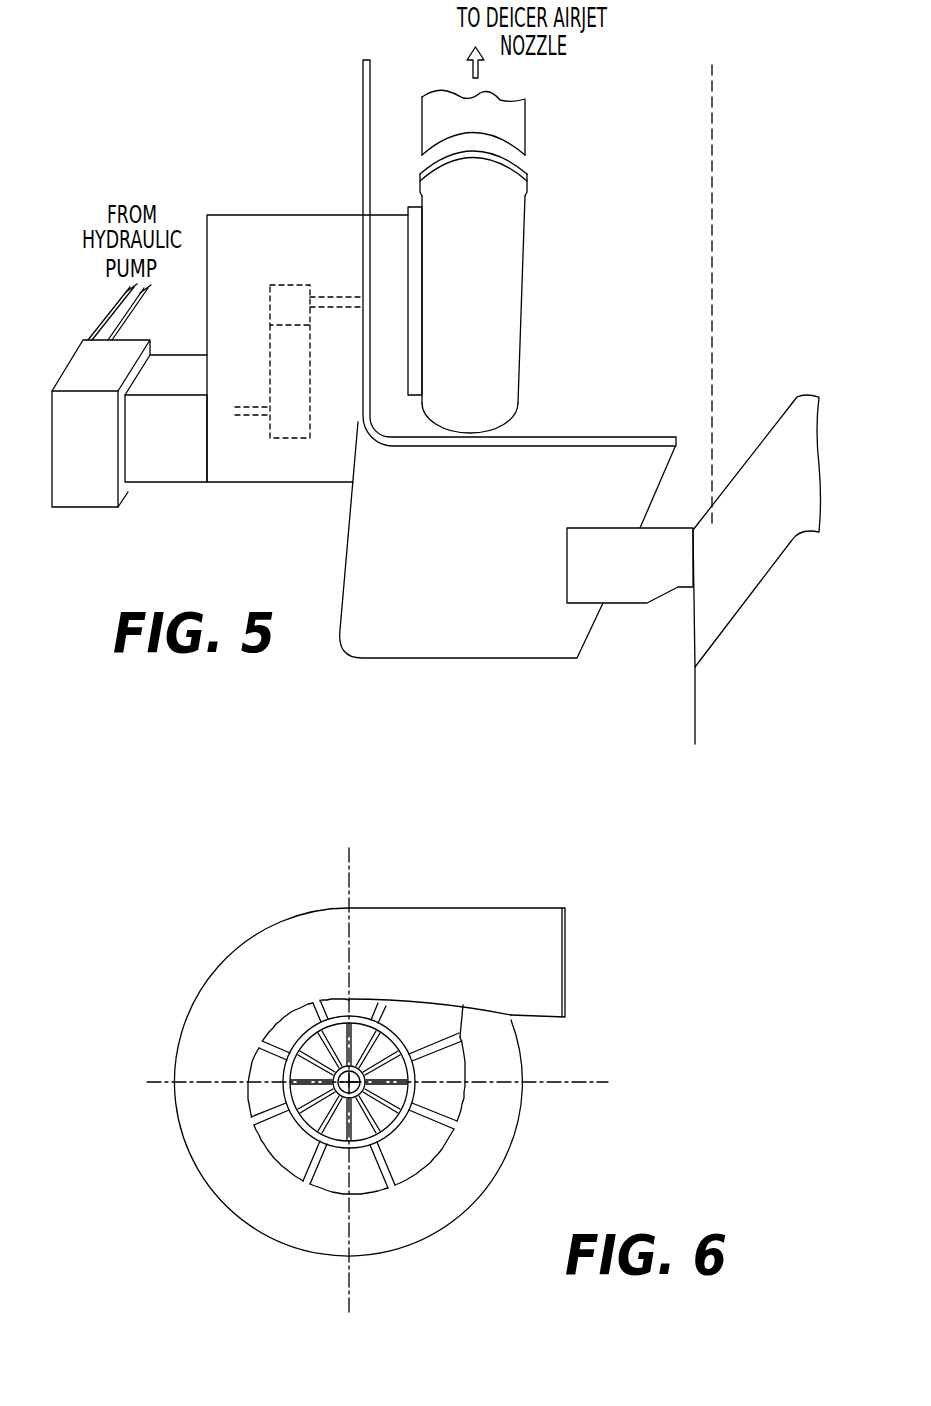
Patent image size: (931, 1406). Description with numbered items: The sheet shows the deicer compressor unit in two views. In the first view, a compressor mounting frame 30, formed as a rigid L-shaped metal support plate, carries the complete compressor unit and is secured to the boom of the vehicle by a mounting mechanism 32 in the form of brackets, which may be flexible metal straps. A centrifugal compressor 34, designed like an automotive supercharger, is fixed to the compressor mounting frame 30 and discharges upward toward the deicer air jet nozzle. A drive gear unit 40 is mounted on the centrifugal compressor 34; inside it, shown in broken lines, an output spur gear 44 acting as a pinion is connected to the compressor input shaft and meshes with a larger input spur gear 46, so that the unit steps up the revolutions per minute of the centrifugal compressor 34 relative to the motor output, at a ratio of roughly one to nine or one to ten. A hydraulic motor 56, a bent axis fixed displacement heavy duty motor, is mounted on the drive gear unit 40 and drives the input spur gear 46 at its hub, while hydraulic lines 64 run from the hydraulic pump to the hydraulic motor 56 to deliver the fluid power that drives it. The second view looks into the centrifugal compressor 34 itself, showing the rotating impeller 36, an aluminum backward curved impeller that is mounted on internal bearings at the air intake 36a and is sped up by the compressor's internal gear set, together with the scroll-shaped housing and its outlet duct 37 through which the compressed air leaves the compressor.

In FIG. 5, the compressor mounting frame 30 is at (483, 647).
In FIG. 5, the mounting mechanism 32 is at (753, 570).
In FIG. 5, the centrifugal compressor 34 is at (501, 254).
In FIG. 6, the centrifugal compressor 34 is at (262, 922).
In FIG. 6, the rotating impeller 36 is at (366, 1066).
In FIG. 6, the air intake 36a is at (394, 1116).
In FIG. 6, the outlet duct 37 is at (567, 966).
In FIG. 5, the drive gear unit 40 is at (347, 230).
In FIG. 5, the output spur gear 44 is at (290, 295).
In FIG. 5, the input spur gear 46 is at (297, 430).
In FIG. 5, the hydraulic motor 56 is at (83, 497).
In FIG. 5, the hydraulic lines 64 is at (105, 313).